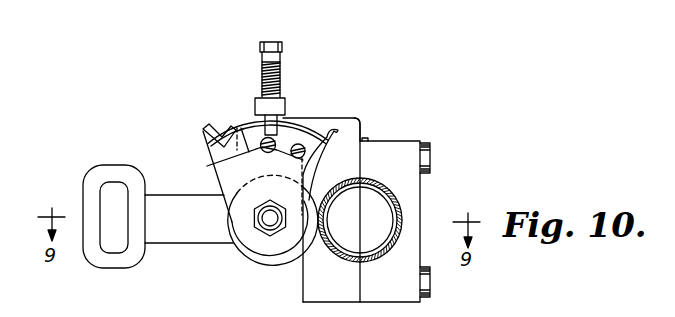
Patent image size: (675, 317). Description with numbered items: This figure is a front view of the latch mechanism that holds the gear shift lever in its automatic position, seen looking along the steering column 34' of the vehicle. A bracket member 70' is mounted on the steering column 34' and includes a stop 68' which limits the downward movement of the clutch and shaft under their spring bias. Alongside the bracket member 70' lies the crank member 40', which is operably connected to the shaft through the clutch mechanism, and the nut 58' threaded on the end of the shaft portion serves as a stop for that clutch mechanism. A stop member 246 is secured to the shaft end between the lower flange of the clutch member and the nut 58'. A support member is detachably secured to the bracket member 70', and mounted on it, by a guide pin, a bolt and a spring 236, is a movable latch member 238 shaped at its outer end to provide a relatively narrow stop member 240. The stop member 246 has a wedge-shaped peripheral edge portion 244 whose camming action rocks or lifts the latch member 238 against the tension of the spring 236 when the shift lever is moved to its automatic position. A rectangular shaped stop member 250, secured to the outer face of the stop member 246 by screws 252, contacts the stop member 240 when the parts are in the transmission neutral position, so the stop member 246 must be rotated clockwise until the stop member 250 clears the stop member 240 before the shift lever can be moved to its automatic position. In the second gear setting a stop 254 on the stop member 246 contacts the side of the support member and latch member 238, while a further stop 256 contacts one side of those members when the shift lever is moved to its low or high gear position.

The spring 236 is at (283, 65).
The movable latch member 238 is at (257, 100).
The stop member 240 is at (284, 112).
The wedge-shaped peripheral edge portion 244 is at (236, 127).
The stop member 246 is at (208, 146).
The stop 254 is at (206, 130).
The rectangular shaped stop member 250 is at (336, 128).
The screws 252 is at (218, 165).
The stop 256 is at (361, 127).
The bracket member 70' is at (371, 210).
The steering column 34' is at (388, 217).
The crank member 40' is at (158, 222).
The stop 68' is at (273, 231).
The nut 58' is at (250, 240).